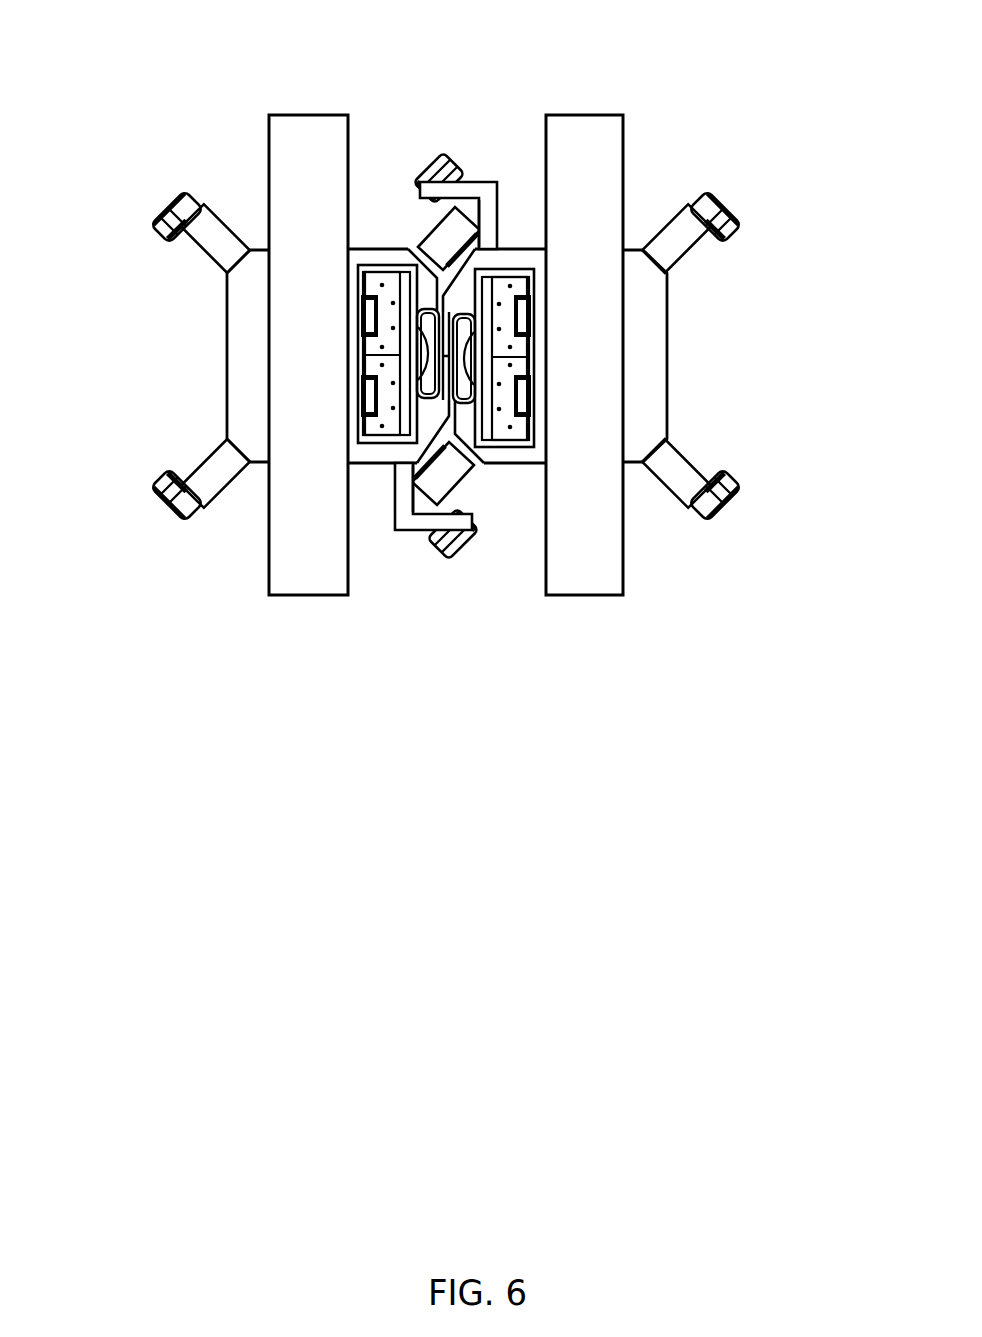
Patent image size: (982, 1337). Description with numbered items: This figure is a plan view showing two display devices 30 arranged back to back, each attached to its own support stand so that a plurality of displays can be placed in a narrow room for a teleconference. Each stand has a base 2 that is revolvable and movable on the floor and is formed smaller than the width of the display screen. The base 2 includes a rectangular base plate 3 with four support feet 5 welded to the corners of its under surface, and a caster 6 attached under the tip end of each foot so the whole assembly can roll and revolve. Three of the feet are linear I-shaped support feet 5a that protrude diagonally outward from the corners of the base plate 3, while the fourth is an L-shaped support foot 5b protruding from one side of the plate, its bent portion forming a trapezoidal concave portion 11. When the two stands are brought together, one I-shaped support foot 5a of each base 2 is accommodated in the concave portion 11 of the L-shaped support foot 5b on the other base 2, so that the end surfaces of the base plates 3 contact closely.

The base 2 is at (367, 238).
The base plate 3 is at (235, 351).
The support feet 5 is at (444, 358).
The I-shaped support feet 5a is at (416, 245).
The L-shaped support foot 5b is at (493, 188).
The casters 6 is at (462, 466).
The concave portion 11 is at (468, 198).
The display device 30 is at (304, 138).